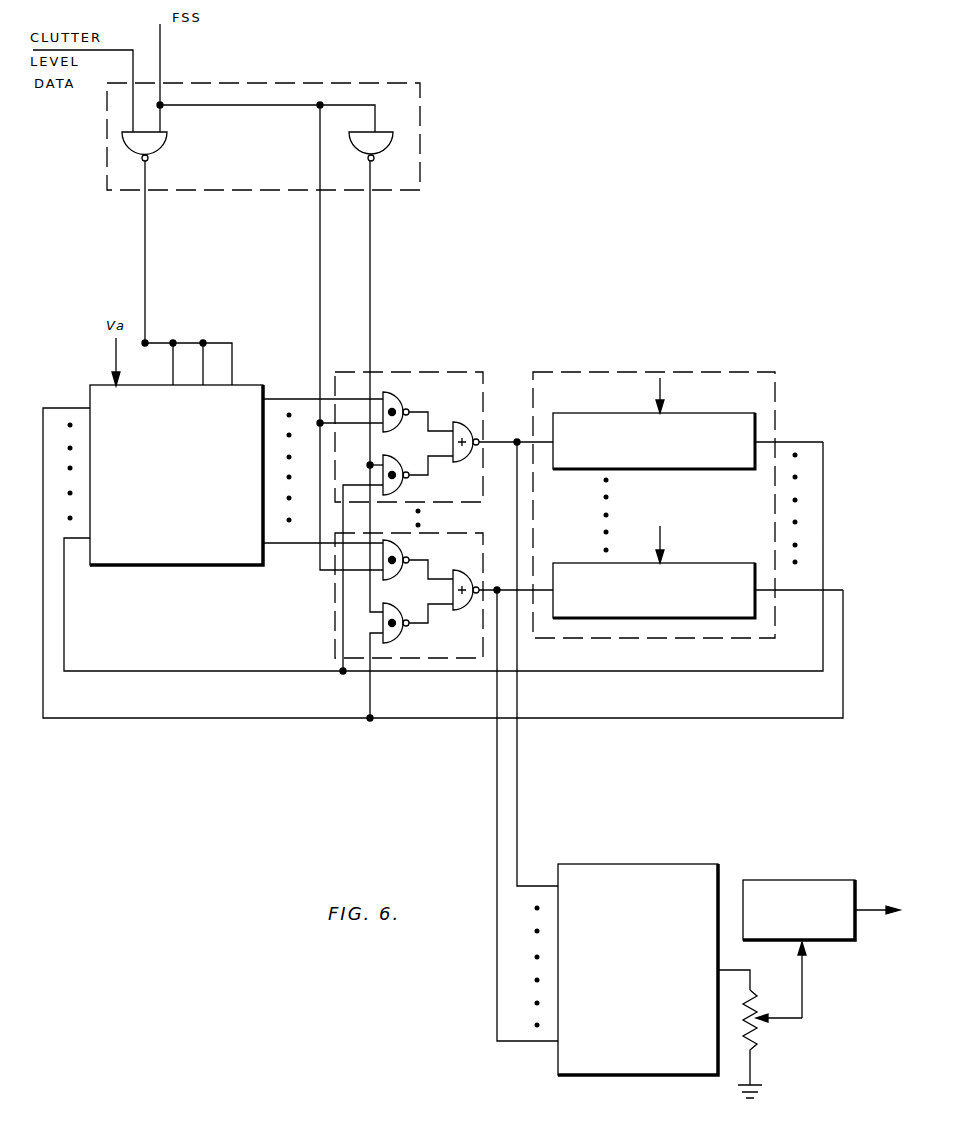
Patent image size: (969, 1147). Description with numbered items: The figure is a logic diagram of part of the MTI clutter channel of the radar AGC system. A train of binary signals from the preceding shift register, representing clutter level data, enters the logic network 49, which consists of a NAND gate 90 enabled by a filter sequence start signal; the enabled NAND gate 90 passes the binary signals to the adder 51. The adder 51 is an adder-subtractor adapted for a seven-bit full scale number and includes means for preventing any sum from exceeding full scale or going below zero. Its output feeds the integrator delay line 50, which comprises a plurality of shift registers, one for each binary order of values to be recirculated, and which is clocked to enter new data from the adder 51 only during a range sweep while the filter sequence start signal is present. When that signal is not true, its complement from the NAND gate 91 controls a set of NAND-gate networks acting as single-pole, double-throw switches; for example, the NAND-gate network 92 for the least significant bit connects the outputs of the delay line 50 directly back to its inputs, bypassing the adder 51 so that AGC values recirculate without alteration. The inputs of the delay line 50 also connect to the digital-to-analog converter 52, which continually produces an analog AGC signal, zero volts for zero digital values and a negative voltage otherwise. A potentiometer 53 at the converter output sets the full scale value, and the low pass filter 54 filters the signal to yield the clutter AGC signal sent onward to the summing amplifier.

The logic network 49 is at (236, 172).
The integrator delay line 50 is at (702, 372).
The adder 51 is at (172, 538).
The digital-to-analog converter 52 is at (681, 862).
The potentiometer 53 is at (771, 1040).
The low pass filter 54 is at (821, 893).
The NAND gate 90 is at (168, 144).
The NAND gate 91 is at (384, 135).
The NAND-gate network 92 is at (402, 372).